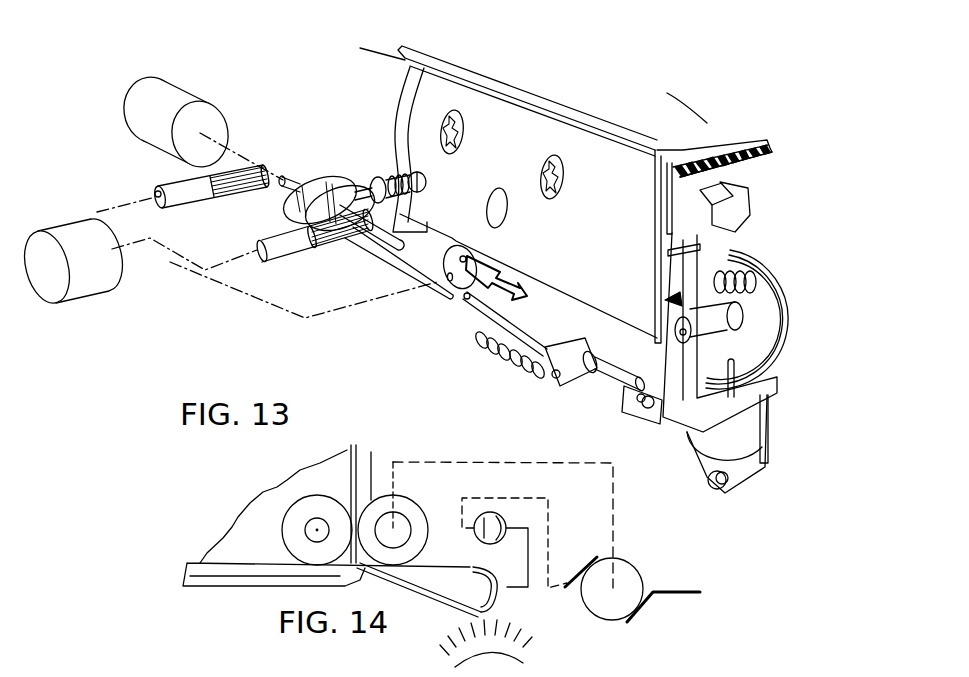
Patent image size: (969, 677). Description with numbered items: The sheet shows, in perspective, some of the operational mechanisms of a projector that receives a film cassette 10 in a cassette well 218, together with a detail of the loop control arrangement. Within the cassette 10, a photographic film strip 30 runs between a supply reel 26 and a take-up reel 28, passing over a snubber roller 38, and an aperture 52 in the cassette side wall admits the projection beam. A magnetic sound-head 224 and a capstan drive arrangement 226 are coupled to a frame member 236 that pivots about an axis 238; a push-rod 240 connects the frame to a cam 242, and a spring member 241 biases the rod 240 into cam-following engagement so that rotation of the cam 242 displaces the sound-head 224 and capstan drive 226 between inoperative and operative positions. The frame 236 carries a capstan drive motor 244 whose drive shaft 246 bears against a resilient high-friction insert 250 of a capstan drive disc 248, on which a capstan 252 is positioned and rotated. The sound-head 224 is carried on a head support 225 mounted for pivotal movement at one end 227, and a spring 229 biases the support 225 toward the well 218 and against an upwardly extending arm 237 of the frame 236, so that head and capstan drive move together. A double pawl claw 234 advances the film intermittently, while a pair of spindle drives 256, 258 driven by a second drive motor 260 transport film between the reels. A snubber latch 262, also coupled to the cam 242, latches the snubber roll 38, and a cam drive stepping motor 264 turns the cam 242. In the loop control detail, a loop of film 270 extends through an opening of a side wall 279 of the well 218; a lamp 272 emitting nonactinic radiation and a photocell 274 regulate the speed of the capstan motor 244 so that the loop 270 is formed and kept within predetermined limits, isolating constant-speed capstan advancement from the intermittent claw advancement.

In FIG. 13, the cassette 10 is at (577, 92).
In FIG. 14, the cassette 10 is at (278, 487).
In FIG. 13, the cassette well 218 is at (420, 58).
In FIG. 13, the take-up spool or reel 28 is at (462, 124).
In FIG. 13, the supply spool or reel 26 is at (565, 172).
In FIG. 13, the aperture 52 is at (508, 212).
In FIG. 13, the cam 242 is at (332, 178).
In FIG. 13, the snubber latch 262 is at (376, 180).
In FIG. 13, the snubber roller 38 is at (426, 179).
In FIG. 13, the spindle drive 256 is at (192, 196).
In FIG. 13, the spindle drive 258 is at (290, 255).
In FIG. 13, the cam drive motor 264 is at (150, 100).
In FIG. 13, the second drive motor 260 is at (78, 230).
In FIG. 13, the linkage or push-rod 240 is at (463, 302).
In FIG. 13, the double pawl claw 234 is at (517, 298).
In FIG. 13, the spring member 241 is at (505, 360).
In FIG. 13, the capstan 252 is at (678, 340).
In FIG. 14, the capstan 252 is at (397, 492).
In FIG. 13, the head support 225 is at (665, 216).
In FIG. 13, the sound-head 224 is at (670, 262).
In FIG. 13, the upwardly extending arm 237 is at (664, 302).
In FIG. 13, the end 227 is at (728, 190).
In FIG. 13, the spring 229 is at (697, 150).
In FIG. 13, the frame member 236 is at (682, 418).
In FIG. 13, the capstan drive motor 244 is at (752, 434).
In FIG. 14, the capstan drive motor 244 is at (614, 558).
In FIG. 13, the axis 238 is at (708, 480).
In FIG. 13, the drive shaft 246 is at (777, 363).
In FIG. 13, the capstan drive disc 248 is at (783, 300).
In FIG. 13, the capstan drive arrangement 226 is at (785, 272).
In FIG. 13, the side wall 279 is at (790, 272).
In FIG. 13, the resilient, high friction surface insert 250 is at (747, 276).
In FIG. 14, the photographic film strip 30 is at (371, 455).
In FIG. 14, the photocell 274 is at (493, 512).
In FIG. 14, the loop of film 270 is at (447, 610).
In FIG. 14, the lamp 272 is at (513, 652).